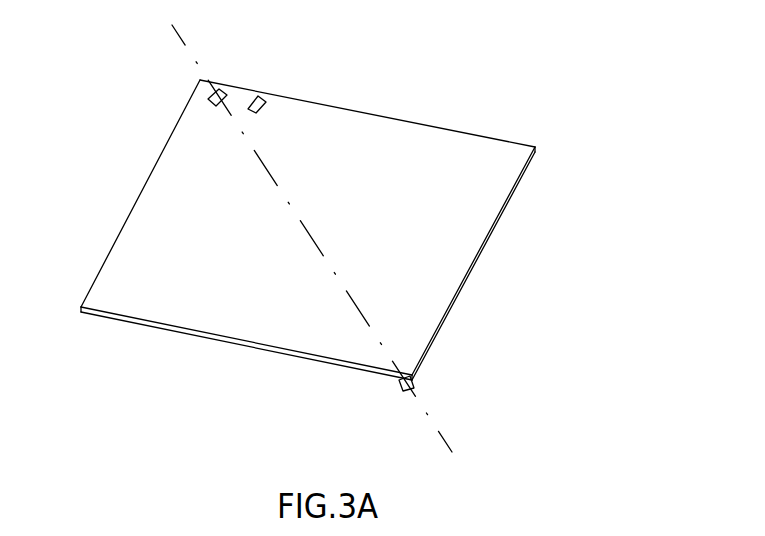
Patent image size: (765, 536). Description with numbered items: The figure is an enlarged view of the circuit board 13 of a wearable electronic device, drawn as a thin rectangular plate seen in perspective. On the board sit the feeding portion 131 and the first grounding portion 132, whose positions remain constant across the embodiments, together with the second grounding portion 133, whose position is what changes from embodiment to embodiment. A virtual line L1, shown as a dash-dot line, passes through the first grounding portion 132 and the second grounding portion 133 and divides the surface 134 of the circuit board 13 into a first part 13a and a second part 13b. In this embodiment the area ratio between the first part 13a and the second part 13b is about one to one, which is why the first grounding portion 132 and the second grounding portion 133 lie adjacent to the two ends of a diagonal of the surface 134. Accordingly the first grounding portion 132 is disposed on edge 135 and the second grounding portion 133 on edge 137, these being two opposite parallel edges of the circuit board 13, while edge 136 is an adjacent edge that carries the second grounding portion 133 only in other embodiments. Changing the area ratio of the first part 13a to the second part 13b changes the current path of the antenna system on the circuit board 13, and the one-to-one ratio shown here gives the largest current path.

The circuit board 13 is at (322, 223).
The first part 13a is at (396, 219).
The second part 13b is at (232, 251).
The feeding portion 131 is at (262, 98).
The first grounding portion 132 is at (218, 90).
The second grounding portion 133 is at (413, 385).
The surface 134 is at (118, 292).
The edge 135 is at (451, 128).
The edge 136 is at (482, 252).
The edge 137 is at (240, 338).
The virtual line L1 is at (182, 40).